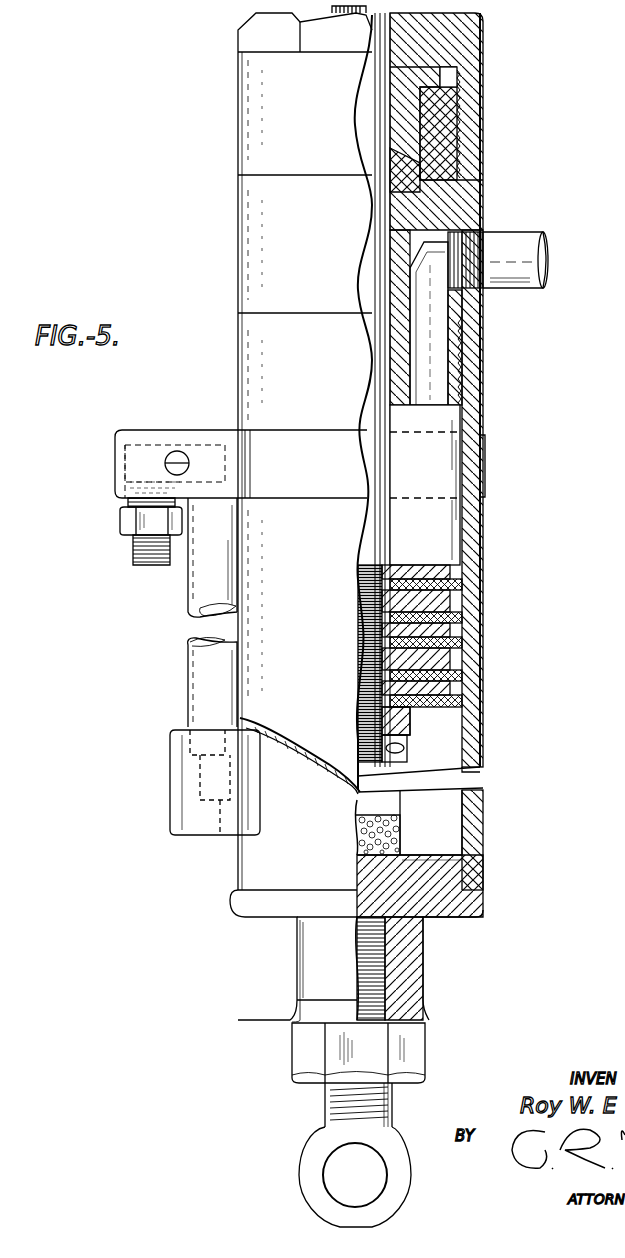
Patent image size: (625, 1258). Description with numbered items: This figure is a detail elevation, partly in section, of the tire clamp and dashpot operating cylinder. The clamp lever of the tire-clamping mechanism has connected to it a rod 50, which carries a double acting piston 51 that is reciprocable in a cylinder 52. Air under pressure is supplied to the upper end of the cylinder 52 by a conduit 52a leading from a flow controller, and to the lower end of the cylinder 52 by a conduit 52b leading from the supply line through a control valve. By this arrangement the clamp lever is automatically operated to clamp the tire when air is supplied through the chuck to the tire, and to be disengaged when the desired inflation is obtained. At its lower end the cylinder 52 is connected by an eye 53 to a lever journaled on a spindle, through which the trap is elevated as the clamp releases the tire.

The rod 50 is at (377, 37).
The double acting piston 51 is at (458, 642).
The cylinder 52 is at (472, 670).
The conduit 52a is at (525, 243).
The conduit 52b is at (143, 565).
The eye 53 is at (390, 1152).